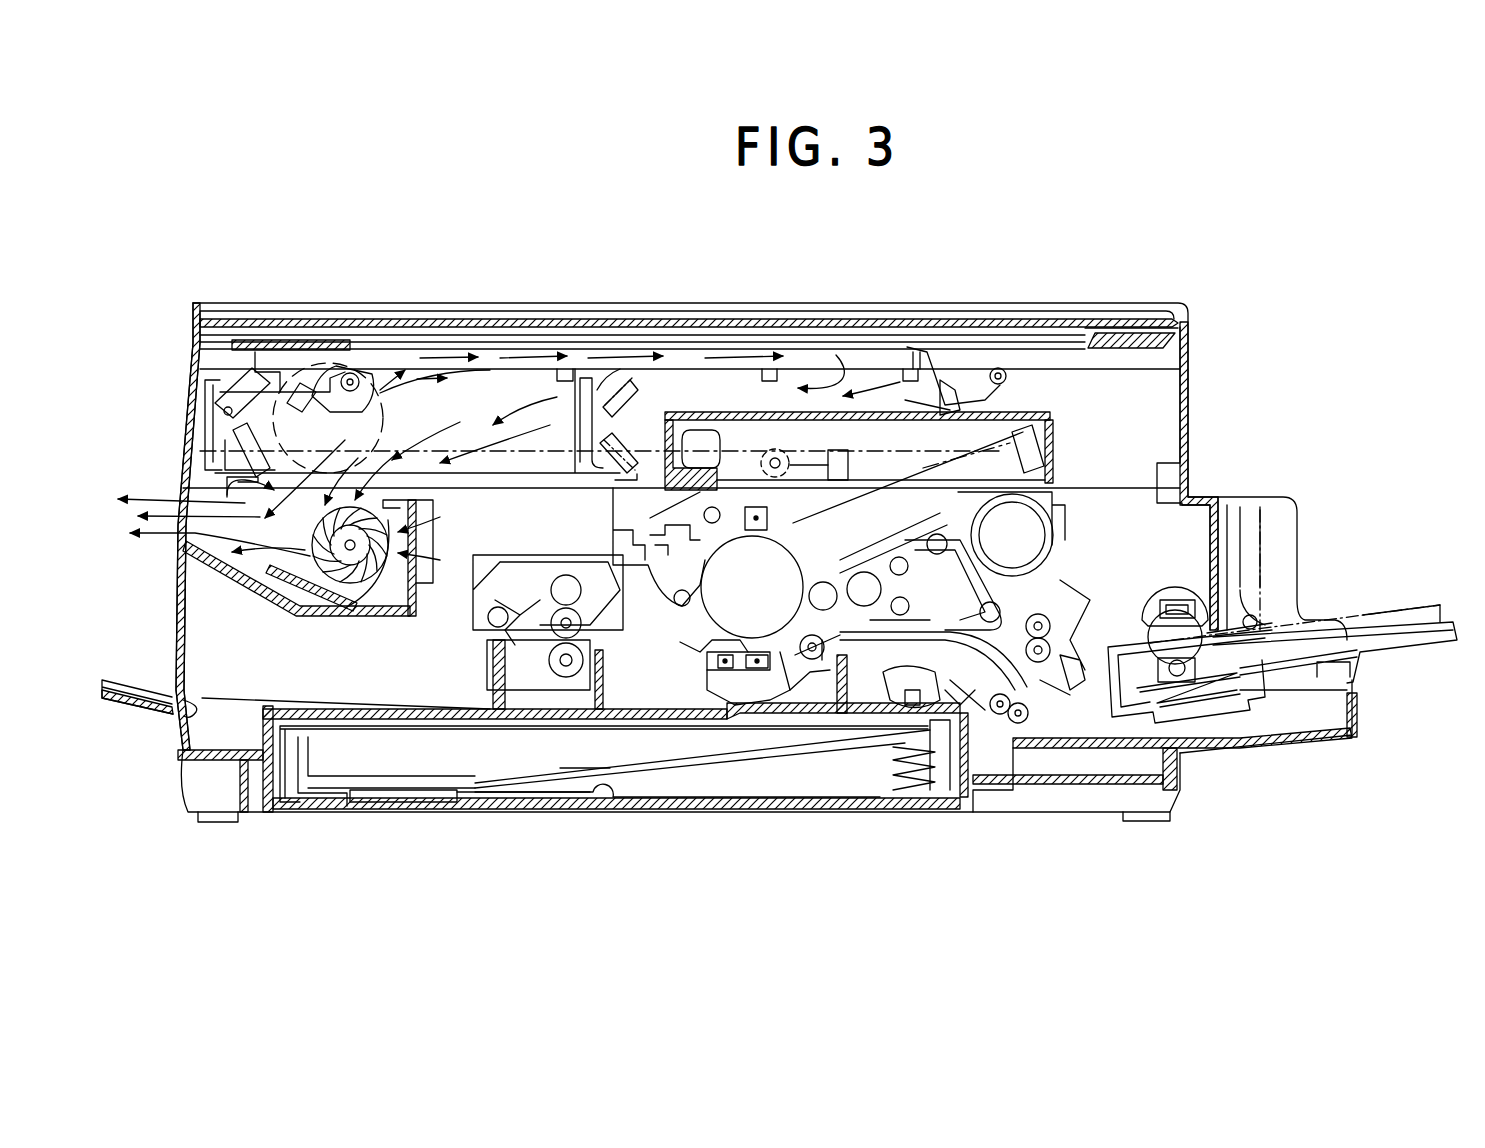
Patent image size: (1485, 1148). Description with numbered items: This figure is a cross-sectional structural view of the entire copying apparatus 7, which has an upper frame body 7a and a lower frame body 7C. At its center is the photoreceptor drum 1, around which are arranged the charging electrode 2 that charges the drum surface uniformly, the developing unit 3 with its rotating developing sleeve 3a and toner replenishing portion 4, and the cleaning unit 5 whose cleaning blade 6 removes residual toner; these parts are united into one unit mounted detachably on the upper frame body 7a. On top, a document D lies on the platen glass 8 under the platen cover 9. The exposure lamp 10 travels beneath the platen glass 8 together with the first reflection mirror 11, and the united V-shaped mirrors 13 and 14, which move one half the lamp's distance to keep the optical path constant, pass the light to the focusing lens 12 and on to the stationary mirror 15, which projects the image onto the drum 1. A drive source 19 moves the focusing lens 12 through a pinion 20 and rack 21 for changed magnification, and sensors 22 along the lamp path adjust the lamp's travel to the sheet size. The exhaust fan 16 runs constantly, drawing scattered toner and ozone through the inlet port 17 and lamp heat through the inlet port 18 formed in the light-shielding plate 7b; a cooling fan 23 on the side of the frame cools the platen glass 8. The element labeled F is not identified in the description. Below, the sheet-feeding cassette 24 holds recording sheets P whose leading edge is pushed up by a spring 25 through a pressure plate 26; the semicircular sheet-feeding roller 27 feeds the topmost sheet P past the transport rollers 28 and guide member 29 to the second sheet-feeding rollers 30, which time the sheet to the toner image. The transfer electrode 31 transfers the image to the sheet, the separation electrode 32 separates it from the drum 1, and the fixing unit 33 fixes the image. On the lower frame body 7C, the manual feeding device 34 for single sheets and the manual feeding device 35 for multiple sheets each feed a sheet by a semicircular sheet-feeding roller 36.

The photoreceptor drum 1 is at (735, 613).
The charging electrode 2 is at (740, 443).
The developing unit 3 is at (874, 580).
The developing sleeve 3a is at (808, 578).
The toner replenishing portion 4 is at (1022, 522).
The cleaning unit 5 is at (697, 522).
The cleaning blade 6 is at (652, 522).
The copying apparatus 7 is at (1210, 478).
The upper frame body 7a is at (1192, 356).
The light-shielding plate 7b is at (541, 490).
The lower frame body 7C is at (1245, 545).
The platen glass 8 is at (507, 335).
The platen cover 9 is at (438, 327).
The exposure lamp 10 is at (350, 372).
The first reflection mirror 11 is at (308, 402).
The focusing lens 12 is at (707, 433).
The V-shaped mirror 13 is at (243, 395).
The V-shaped mirror 14 is at (233, 440).
The stationary mirror 15 is at (1025, 436).
The exhaust fan 16 is at (247, 577).
The inlet port 17 is at (418, 572).
The inlet port 18 is at (228, 483).
The drive source 19 is at (848, 465).
The pinion 20 is at (778, 457).
The rack 21 is at (815, 523).
The sensors 22 is at (570, 369).
The cooling fan 23 is at (377, 388).
The sheet-feeding cassette 24 is at (897, 808).
The spring 25 is at (948, 786).
The pressure plate 26 is at (833, 750).
The semicircular sheet-feeding roller 27 is at (988, 712).
The transport rollers 28 is at (1030, 722).
The guide member 29 is at (950, 640).
The second sheet-feeding rollers 30 is at (812, 660).
The transfer electrode 31 is at (800, 678).
The separation electrode 32 is at (757, 668).
The fixing unit 33 is at (566, 678).
The manual feeding device 34 is at (1272, 540).
The manual feeding device 35 is at (1307, 690).
The semicircular sheet-feeding roller 36 is at (1165, 590).
The document D is at (880, 303).
The fan F is at (440, 519).
The recording sheets P is at (762, 752).